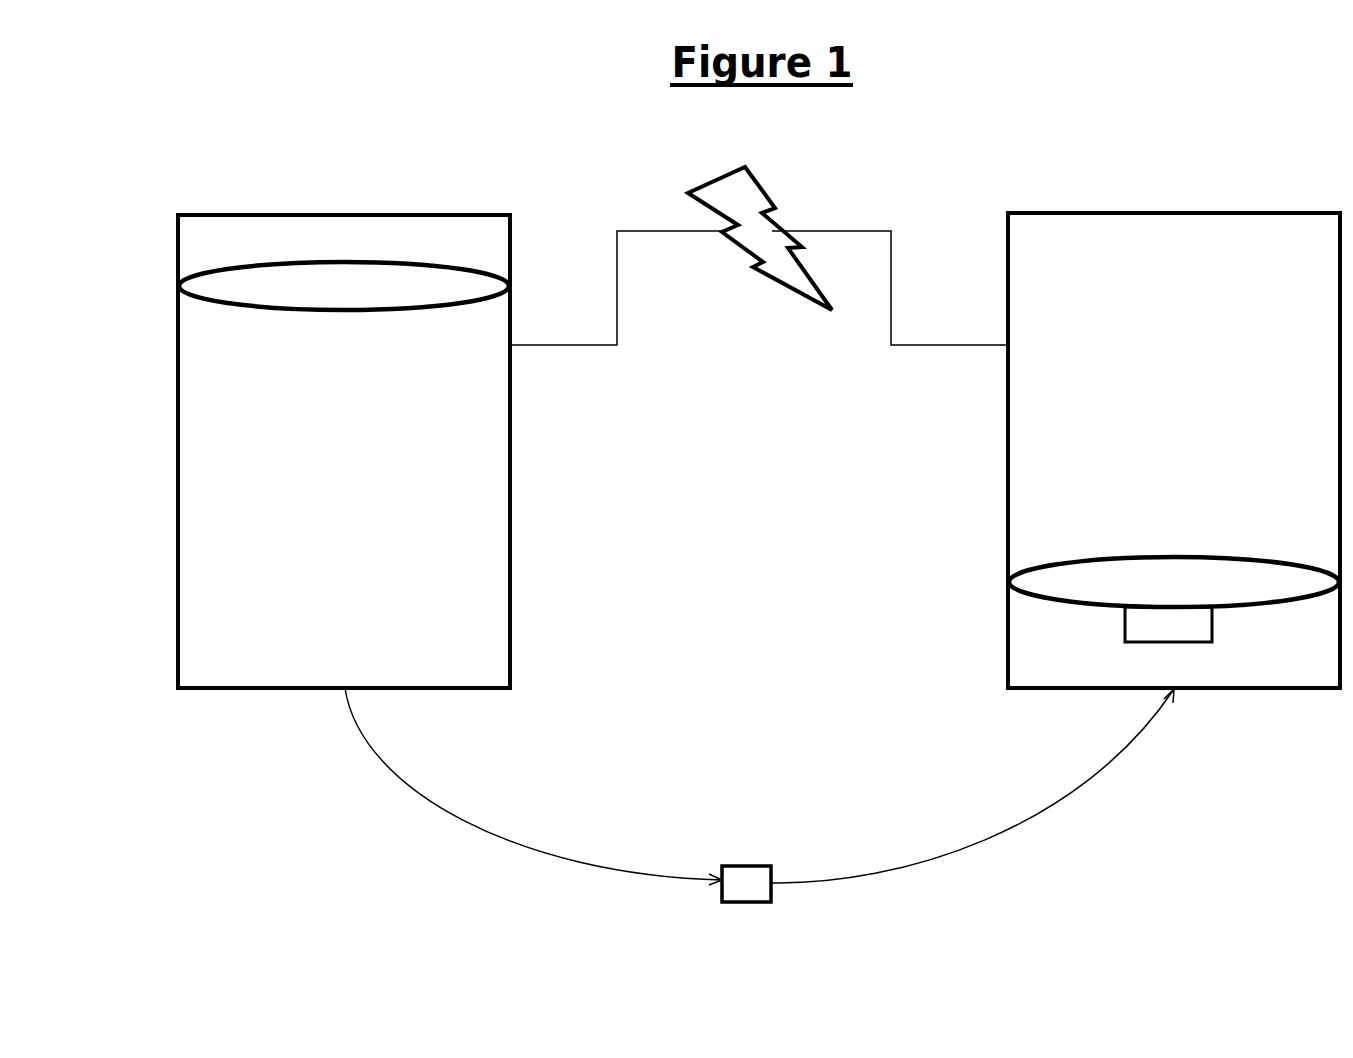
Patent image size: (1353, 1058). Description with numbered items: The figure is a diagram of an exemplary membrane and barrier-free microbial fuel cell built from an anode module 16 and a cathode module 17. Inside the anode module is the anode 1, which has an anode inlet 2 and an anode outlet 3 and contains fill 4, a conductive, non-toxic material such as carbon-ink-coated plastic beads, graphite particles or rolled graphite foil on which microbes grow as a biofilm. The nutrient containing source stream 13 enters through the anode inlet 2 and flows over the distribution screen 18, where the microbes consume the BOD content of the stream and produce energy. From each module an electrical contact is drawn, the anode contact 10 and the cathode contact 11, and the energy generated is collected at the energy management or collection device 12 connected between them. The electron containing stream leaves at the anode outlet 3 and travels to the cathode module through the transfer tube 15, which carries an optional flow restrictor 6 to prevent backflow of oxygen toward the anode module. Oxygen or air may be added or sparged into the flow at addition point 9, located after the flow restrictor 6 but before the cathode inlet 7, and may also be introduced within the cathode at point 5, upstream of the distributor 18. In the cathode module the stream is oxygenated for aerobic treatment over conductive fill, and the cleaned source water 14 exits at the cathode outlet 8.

The anode 1 is at (345, 436).
The anode inlet 2 is at (350, 192).
The anode outlet 3 is at (350, 712).
The fill 4 is at (432, 403).
The oxygen addition point within cathode 5 is at (1174, 600).
The flow restrictor 6 is at (746, 885).
The cathode inlet 7 is at (1180, 713).
The cathode outlet 8 is at (1180, 198).
The oxygen addition point 9 is at (759, 790).
The anode electrical contact 10 is at (616, 288).
The cathode electrical contact 11 is at (890, 288).
The energy management or collection device 12 is at (760, 238).
The nutrient containing source stream 13 is at (180, 97).
The cleaned source water 14 is at (1173, 213).
The transfer tube 15 is at (596, 843).
The anode module 16 is at (287, 560).
The cathode module 17 is at (1173, 462).
The distribution screen 18 is at (488, 321).